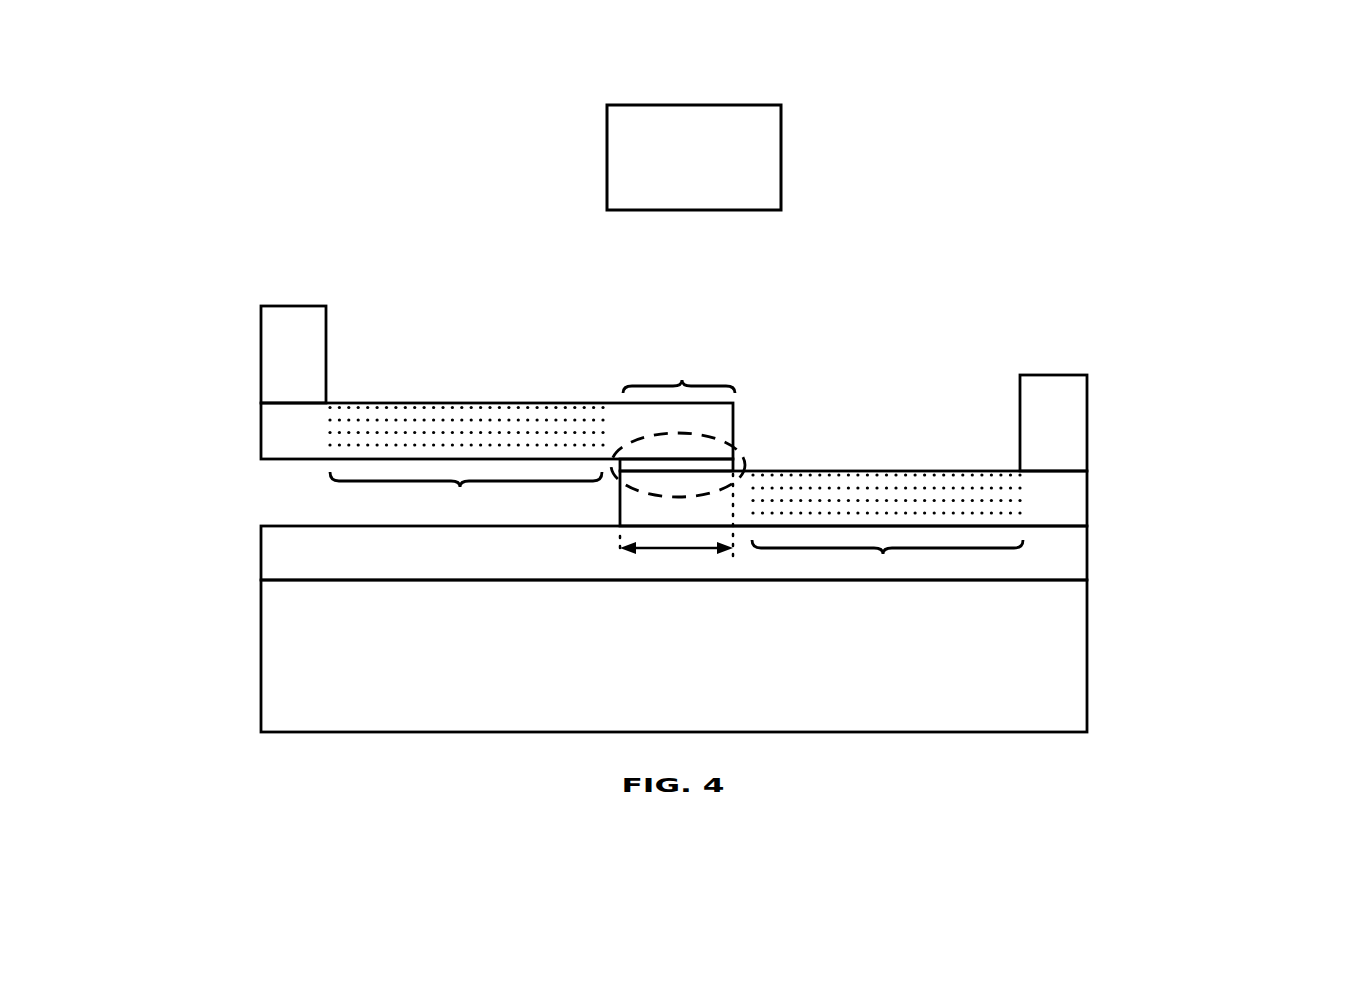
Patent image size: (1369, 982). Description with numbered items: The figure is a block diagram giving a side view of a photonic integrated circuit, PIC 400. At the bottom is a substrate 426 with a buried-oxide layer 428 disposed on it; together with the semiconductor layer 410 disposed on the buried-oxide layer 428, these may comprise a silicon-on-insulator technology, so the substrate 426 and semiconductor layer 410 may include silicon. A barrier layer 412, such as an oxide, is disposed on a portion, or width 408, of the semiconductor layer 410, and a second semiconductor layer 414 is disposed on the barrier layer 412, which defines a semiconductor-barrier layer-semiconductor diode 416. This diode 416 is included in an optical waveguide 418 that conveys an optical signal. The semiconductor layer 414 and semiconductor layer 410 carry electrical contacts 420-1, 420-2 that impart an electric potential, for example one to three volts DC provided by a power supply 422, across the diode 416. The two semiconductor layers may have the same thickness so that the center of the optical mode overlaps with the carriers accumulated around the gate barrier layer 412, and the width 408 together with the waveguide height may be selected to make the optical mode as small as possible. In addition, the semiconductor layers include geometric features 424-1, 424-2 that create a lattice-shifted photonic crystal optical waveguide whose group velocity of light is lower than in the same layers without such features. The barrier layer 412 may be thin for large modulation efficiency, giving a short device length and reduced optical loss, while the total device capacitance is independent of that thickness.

The photonic integrated circuit (PIC) 400 is at (253, 135).
The width 408 is at (678, 550).
The semiconductor layer 410 is at (1057, 497).
The barrier layer 412 is at (682, 465).
The semiconductor layer 414 is at (407, 402).
The semiconductor-barrier layer-semiconductor diode 416 is at (693, 437).
The optical waveguide 418 is at (682, 381).
The electrical contact 420-1 is at (285, 328).
The electrical contact 420-2 is at (1048, 410).
The power supply 422 is at (712, 192).
The geometric features 424-1 is at (460, 487).
The geometric features 424-2 is at (883, 554).
The substrate 426 is at (1043, 677).
The buried-oxide layer 428 is at (1057, 552).